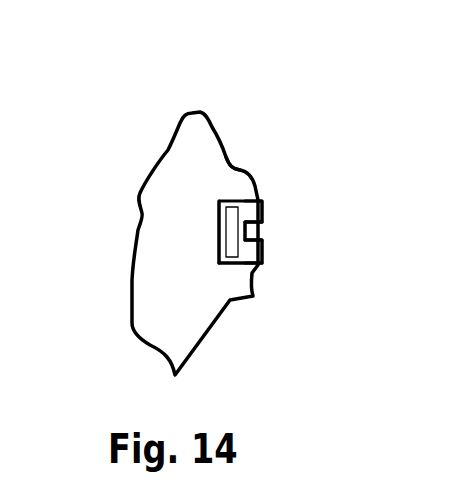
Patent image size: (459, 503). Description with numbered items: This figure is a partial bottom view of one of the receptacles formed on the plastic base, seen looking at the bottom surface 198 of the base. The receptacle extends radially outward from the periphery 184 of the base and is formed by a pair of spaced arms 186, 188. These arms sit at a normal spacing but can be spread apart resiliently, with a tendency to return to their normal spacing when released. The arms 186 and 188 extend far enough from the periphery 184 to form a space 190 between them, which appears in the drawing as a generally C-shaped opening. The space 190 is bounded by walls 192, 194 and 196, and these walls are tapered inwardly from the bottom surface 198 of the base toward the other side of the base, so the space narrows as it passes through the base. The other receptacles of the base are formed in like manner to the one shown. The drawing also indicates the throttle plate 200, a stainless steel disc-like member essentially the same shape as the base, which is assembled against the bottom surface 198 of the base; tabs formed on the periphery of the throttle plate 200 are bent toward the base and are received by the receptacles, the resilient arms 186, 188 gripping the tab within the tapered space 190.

The throttle plate 200 is at (186, 96).
The bottom surface 198 is at (170, 218).
The periphery 184 is at (219, 134).
The wall 196 is at (228, 201).
The arm 188 is at (255, 187).
The space 190 is at (246, 232).
The arm 186 is at (252, 271).
The wall 194 is at (219, 246).
The wall 192 is at (228, 264).